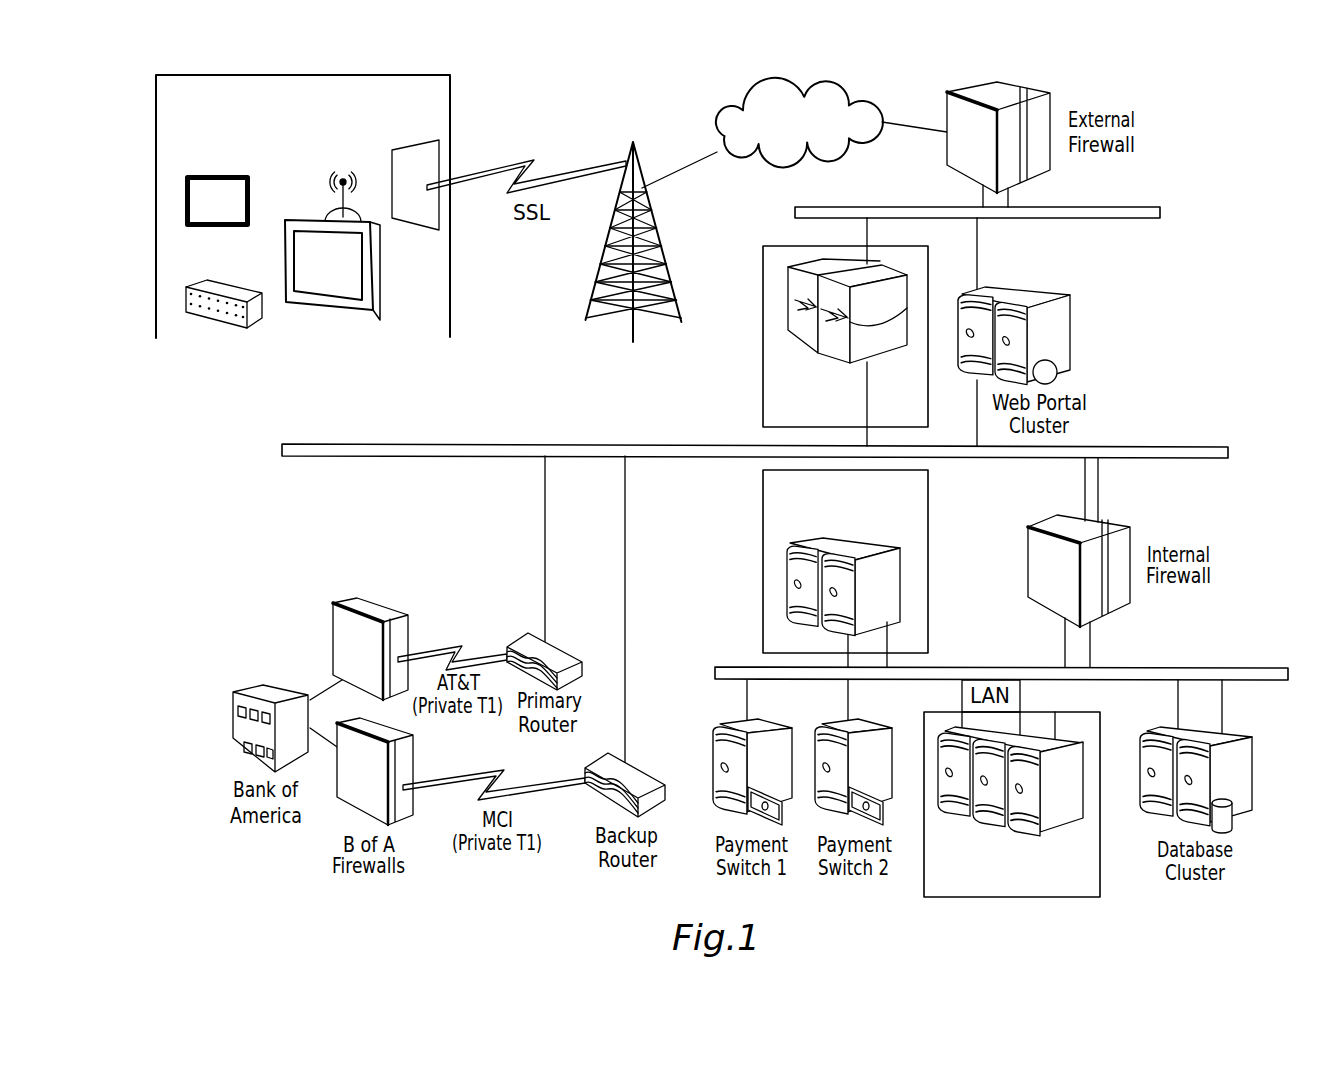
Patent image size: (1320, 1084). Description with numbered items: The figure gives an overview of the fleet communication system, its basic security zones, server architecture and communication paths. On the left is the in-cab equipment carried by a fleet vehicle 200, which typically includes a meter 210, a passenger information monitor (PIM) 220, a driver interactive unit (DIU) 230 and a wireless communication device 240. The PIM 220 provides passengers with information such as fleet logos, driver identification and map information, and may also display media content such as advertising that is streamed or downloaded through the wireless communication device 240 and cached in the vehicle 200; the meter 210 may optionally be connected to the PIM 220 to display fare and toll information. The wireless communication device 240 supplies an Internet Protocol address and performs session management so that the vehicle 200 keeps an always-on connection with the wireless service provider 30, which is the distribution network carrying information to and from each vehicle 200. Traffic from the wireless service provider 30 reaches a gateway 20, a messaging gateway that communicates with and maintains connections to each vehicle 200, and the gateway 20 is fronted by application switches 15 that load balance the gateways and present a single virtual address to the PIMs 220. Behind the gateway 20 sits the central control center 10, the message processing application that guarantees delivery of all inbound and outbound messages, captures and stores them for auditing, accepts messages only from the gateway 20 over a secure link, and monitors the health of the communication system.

The central control center 10 is at (955, 880).
The application switches 15 is at (777, 523).
The gateway 20 is at (776, 358).
The wireless service provider 30 is at (637, 160).
The vehicle 200 is at (442, 100).
The meter 210 is at (185, 193).
The passenger information monitor (PIM) 220 is at (375, 308).
The driver interactive unit (DIU) 230 is at (193, 312).
The wireless communication device 240 is at (432, 215).